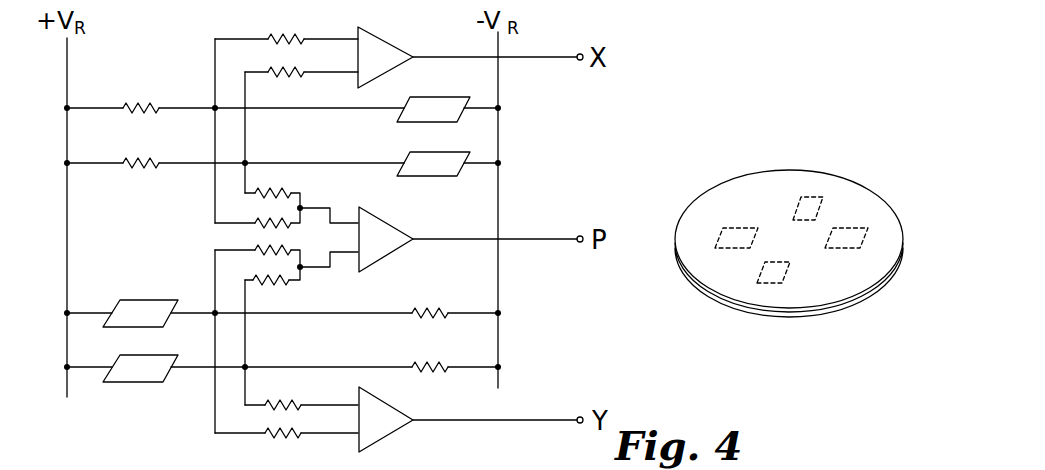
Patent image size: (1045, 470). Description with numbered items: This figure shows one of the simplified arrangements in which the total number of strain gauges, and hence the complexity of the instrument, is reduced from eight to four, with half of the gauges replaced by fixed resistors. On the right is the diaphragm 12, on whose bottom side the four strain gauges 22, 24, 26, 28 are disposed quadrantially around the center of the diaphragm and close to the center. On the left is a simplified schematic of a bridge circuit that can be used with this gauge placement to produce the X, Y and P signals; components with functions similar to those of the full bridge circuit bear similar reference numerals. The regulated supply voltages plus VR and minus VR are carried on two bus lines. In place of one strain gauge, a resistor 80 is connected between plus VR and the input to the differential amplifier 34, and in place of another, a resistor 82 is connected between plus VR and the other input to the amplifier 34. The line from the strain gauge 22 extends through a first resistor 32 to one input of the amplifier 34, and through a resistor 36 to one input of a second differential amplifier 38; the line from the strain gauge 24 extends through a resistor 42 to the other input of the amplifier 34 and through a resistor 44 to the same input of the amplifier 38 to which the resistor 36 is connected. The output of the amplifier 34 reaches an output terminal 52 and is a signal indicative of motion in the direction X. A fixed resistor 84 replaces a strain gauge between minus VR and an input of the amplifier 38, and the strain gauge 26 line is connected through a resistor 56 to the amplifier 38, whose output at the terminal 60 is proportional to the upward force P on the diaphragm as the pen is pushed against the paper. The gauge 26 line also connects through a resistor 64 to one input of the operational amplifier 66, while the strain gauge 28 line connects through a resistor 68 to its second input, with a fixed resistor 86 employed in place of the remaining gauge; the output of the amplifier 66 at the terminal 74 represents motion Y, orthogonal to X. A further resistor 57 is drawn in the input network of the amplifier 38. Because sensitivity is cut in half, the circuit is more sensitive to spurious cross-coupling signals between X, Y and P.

The diaphragm 12 is at (718, 299).
The strain gauge 22 is at (433, 97).
The strain gauge 24 is at (442, 152).
The strain gauge 26 is at (162, 300).
The strain gauge 28 is at (156, 355).
The first resistor 32 is at (283, 36).
The differential amplifier 34 is at (375, 35).
The resistor 36 is at (252, 223).
The differential amplifier 38 is at (374, 215).
The resistor 42 is at (271, 77).
The resistor 44 is at (288, 192).
The output terminal 52 is at (578, 55).
The resistor 56 is at (254, 248).
The resistor 57 is at (281, 283).
The output terminal 60 is at (579, 237).
The resistor 64 is at (288, 433).
The operational amplifier 66 is at (381, 392).
The resistor 68 is at (288, 404).
The terminal 74 is at (580, 418).
The resistor 80 is at (141, 103).
The resistor 82 is at (140, 158).
The fixed resistor 84 is at (422, 311).
The fixed resistor 86 is at (437, 366).